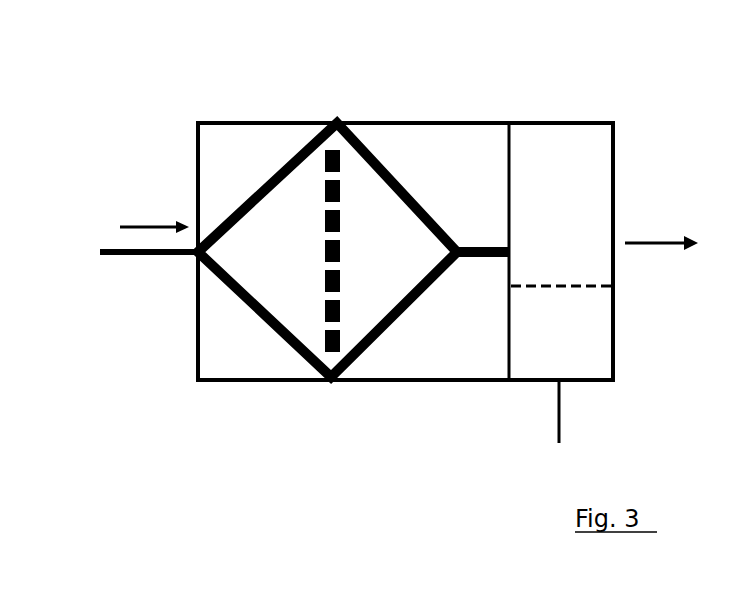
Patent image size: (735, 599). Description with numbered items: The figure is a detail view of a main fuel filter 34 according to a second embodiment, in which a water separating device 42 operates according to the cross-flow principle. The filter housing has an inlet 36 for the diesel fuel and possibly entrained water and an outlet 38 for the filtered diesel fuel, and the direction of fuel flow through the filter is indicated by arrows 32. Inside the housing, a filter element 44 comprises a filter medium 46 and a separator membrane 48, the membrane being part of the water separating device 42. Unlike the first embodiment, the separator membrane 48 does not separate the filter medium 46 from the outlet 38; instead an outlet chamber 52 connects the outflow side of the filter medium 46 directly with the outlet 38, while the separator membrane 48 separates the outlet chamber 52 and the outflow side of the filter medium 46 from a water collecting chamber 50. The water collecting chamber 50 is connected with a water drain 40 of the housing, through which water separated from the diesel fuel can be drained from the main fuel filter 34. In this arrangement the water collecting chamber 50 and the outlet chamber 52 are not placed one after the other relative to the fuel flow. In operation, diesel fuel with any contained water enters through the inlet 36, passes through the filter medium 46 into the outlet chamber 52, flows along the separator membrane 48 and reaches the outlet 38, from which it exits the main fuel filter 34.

The arrows 32 is at (643, 241).
The main fuel filter 34 is at (373, 124).
The inlet 36 is at (196, 245).
The outlet 38 is at (614, 252).
The water drain 40 is at (557, 435).
The water separating device 42 is at (587, 348).
The filter element 44 is at (293, 183).
The filter medium 46 is at (327, 282).
The separator membrane 48 is at (593, 288).
The water collecting chamber 50 is at (522, 367).
The outlet chamber 52 is at (551, 187).